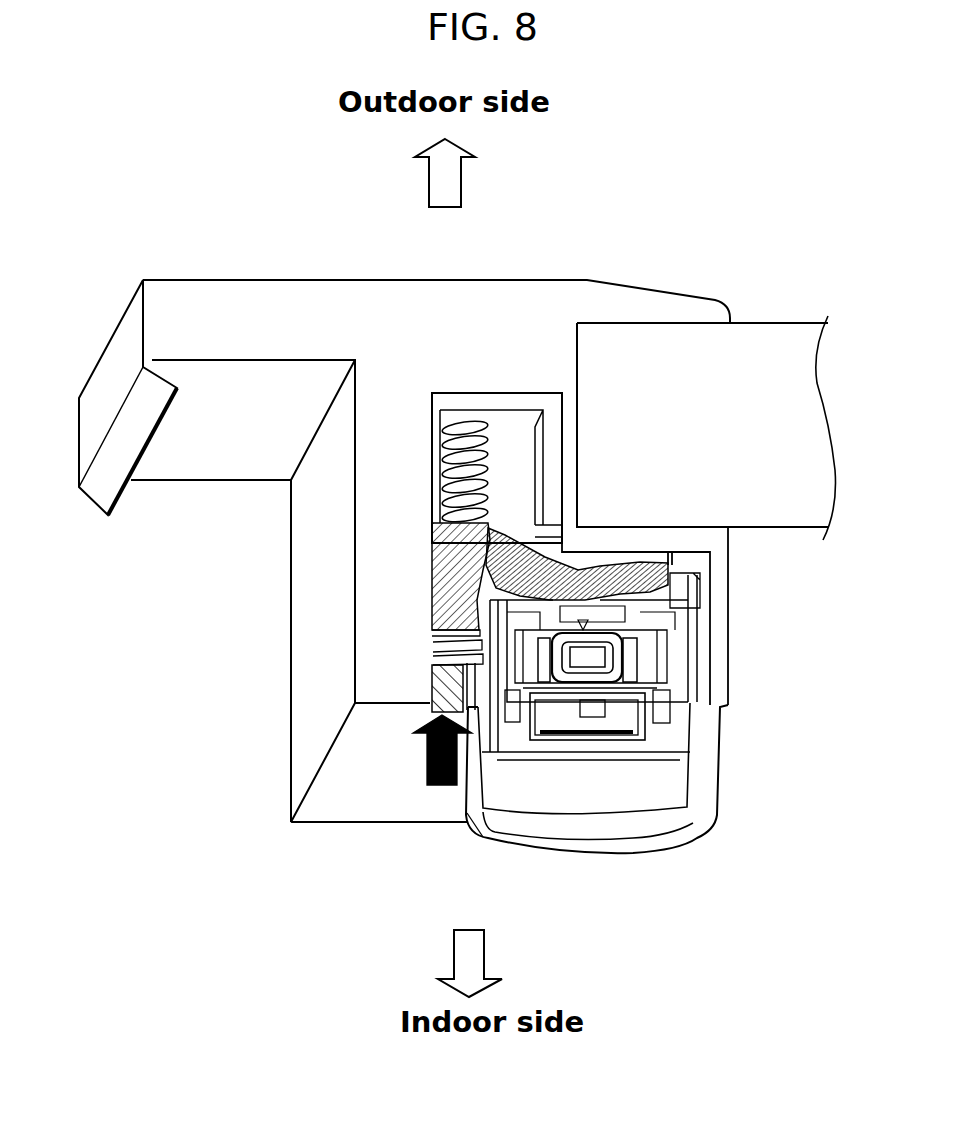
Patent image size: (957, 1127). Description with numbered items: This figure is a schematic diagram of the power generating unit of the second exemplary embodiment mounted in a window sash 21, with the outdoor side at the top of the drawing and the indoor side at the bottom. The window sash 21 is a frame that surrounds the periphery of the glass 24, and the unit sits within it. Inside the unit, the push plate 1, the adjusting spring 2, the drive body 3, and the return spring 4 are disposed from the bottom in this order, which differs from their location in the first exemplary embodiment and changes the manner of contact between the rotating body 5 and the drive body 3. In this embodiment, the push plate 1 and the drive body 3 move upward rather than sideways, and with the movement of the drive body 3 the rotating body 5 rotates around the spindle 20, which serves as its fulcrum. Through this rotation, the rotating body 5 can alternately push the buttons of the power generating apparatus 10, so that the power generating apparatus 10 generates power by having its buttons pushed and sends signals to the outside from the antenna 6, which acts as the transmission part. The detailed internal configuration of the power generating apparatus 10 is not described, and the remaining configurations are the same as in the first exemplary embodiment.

The push plate 1 is at (432, 683).
The adjusting spring 2 is at (473, 682).
The drive body 3 is at (457, 557).
The return spring 4 is at (458, 440).
The rotating body 5 is at (520, 550).
The antenna 6 is at (580, 733).
The power generating apparatus 10 is at (657, 723).
The spindle 20 is at (670, 571).
The window sash 21 is at (275, 315).
The glass 24 is at (780, 352).